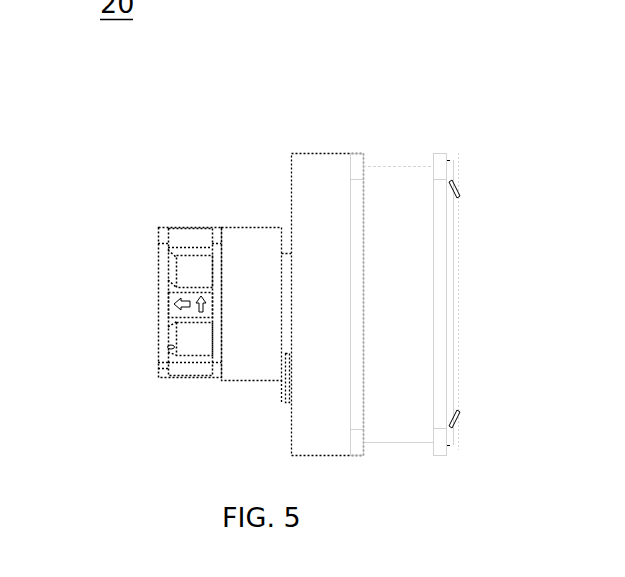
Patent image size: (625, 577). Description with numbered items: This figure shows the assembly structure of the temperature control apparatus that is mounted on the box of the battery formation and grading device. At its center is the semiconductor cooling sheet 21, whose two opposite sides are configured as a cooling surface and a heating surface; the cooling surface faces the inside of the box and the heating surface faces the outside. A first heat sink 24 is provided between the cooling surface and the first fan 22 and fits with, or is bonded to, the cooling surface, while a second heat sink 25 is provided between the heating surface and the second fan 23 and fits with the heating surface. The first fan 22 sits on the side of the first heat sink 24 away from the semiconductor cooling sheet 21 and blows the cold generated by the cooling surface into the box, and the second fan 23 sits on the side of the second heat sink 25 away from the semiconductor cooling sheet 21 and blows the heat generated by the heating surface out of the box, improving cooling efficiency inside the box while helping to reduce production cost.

The semiconductor cooling sheet 21 is at (286, 263).
The first fan 22 is at (158, 303).
The second fan 23 is at (406, 183).
The first heat sink 24 is at (238, 234).
The second heat sink 25 is at (323, 187).